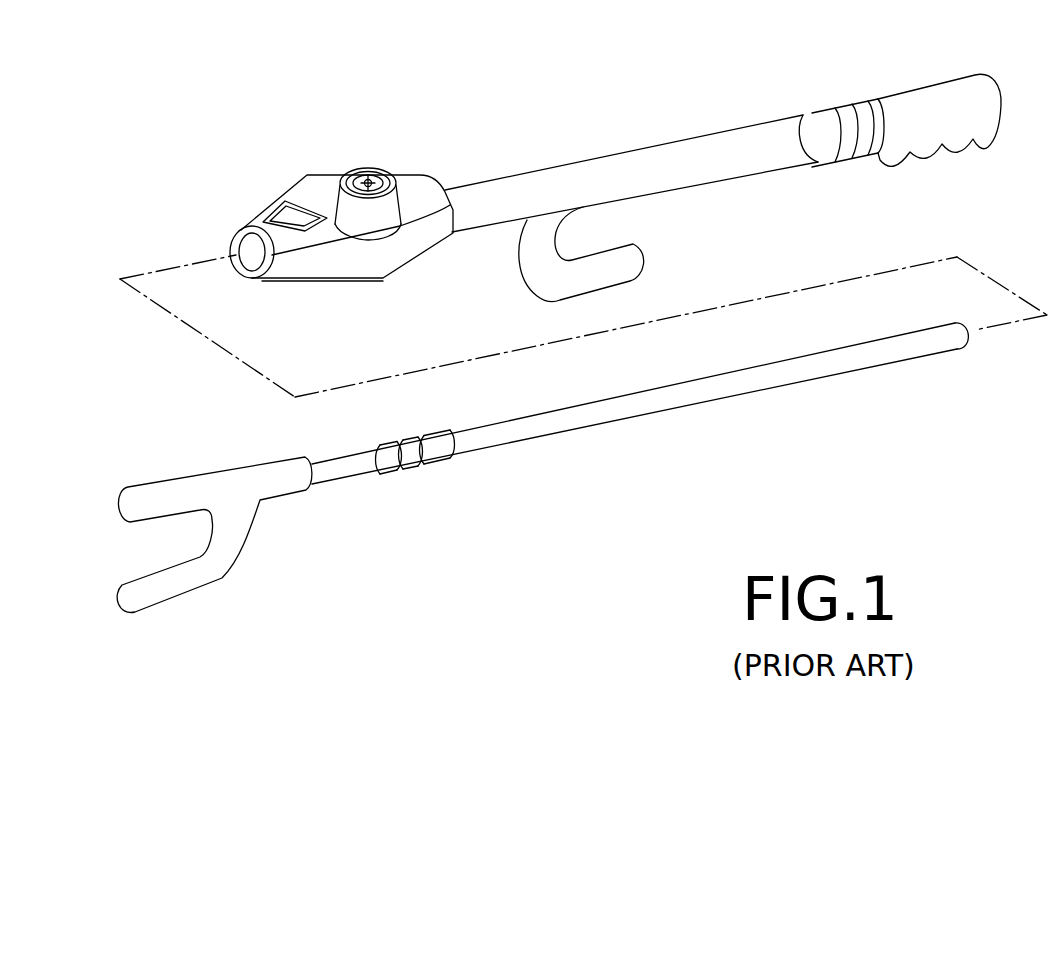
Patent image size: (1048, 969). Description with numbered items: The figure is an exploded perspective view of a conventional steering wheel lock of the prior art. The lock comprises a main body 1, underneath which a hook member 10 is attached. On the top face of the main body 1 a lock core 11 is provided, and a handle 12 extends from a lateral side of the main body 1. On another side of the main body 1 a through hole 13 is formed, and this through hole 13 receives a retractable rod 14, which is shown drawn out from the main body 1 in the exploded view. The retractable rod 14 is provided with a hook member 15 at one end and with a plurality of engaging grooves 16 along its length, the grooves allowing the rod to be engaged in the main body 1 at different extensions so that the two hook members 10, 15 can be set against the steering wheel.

The main body 1 is at (607, 142).
The hook member 10 is at (627, 263).
The lock cylinder 11 is at (360, 177).
The handle 12 is at (893, 98).
The through hole 13 is at (255, 252).
The retractable rod 14 is at (577, 438).
The hook member 15 is at (217, 572).
The engaging grooves 16 is at (407, 458).